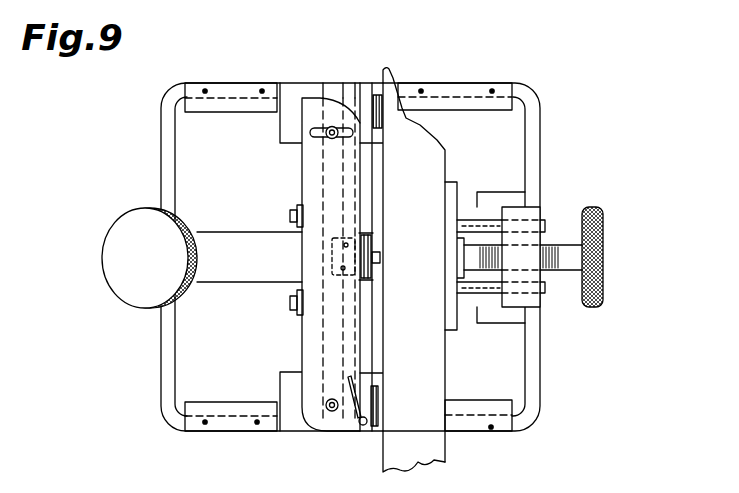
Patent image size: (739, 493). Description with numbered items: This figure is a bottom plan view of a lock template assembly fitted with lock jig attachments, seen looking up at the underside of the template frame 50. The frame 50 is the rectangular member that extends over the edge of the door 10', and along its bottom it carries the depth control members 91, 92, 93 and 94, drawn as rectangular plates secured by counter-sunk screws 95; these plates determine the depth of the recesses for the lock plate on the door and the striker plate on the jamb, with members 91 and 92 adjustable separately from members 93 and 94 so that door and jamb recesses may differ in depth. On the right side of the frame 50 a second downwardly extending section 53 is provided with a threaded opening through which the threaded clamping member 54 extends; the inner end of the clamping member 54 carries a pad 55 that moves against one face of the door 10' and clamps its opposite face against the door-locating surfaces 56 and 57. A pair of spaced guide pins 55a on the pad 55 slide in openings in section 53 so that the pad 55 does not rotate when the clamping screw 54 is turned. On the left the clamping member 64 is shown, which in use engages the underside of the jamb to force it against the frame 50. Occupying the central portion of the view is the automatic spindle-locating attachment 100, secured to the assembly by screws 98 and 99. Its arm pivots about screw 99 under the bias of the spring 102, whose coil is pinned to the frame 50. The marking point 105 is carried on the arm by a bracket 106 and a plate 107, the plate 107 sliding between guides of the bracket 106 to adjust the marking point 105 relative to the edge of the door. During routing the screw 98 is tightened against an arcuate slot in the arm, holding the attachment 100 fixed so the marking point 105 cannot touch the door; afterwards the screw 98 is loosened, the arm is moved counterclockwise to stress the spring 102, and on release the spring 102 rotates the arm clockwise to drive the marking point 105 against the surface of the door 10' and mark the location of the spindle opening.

The door 10' is at (424, 280).
The frame 50 is at (535, 360).
The second downwardly extending section 53 is at (536, 210).
The threaded clamping member 54 is at (604, 290).
The pad 55 is at (456, 183).
The guide pins 55a is at (483, 221).
The door-locating surface 56 is at (385, 73).
The door-locating surface 57 is at (380, 415).
The clamping member 64 is at (125, 291).
The depth control member 91 is at (460, 92).
The depth control member 92 is at (484, 427).
The depth control member 93 is at (237, 424).
The depth control member 94 is at (232, 92).
The counter-sunk screws 95 is at (262, 93).
The screw 98 is at (326, 138).
The screw 99 is at (331, 411).
The automatic spindle-locating attachment 100 is at (305, 183).
The spring 102 is at (357, 430).
The marking point 105 is at (380, 255).
The bracket 106 is at (333, 262).
The plate 107 is at (372, 273).